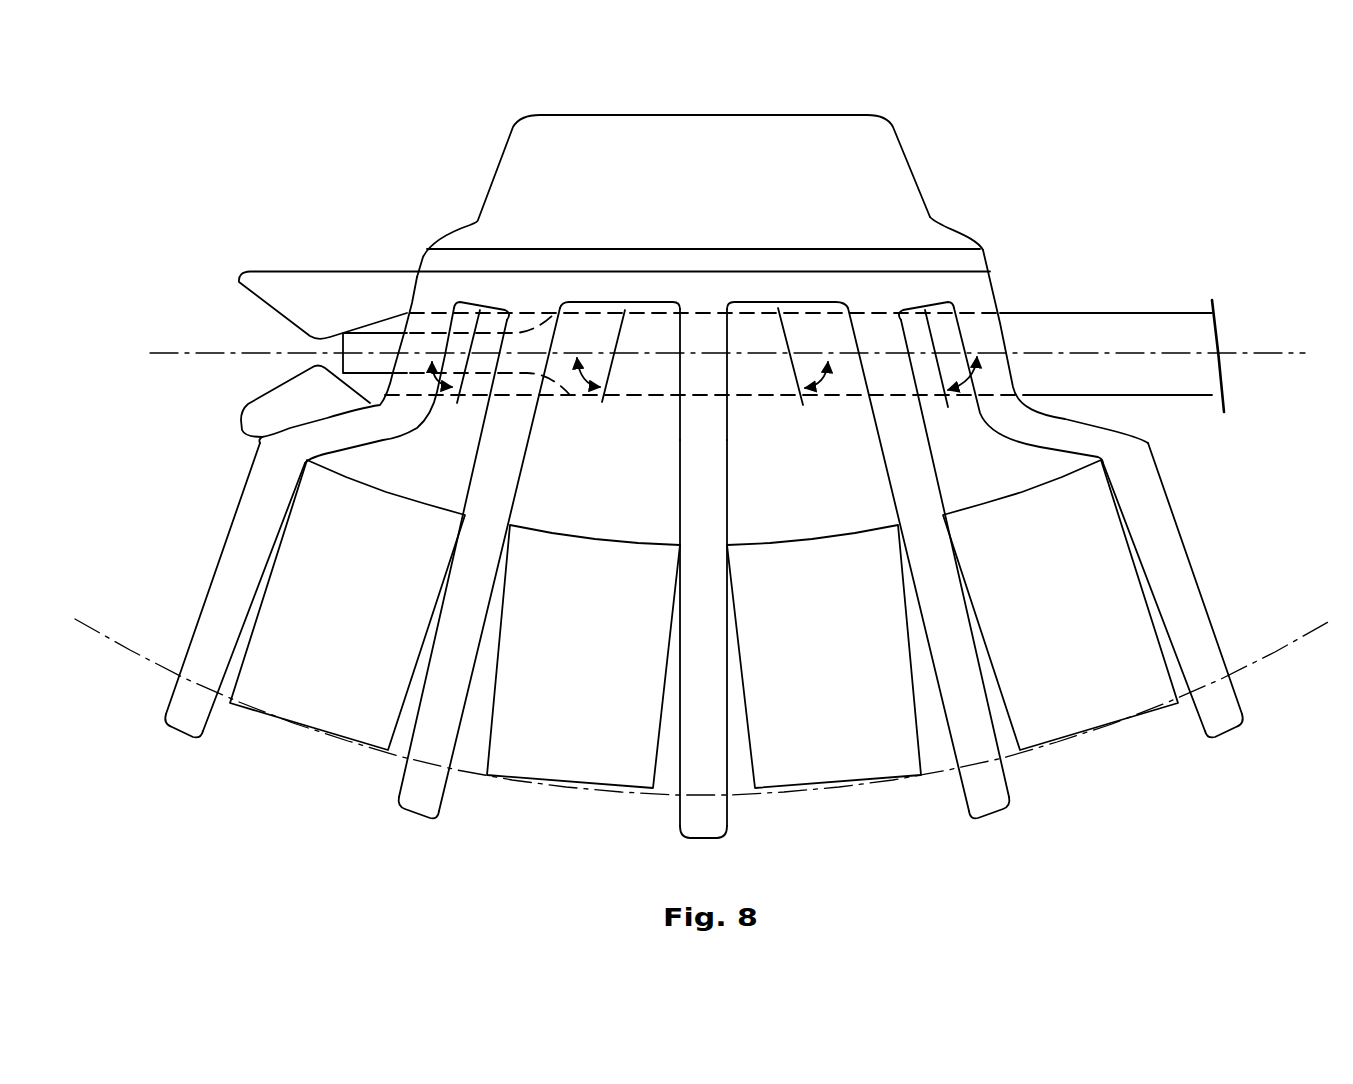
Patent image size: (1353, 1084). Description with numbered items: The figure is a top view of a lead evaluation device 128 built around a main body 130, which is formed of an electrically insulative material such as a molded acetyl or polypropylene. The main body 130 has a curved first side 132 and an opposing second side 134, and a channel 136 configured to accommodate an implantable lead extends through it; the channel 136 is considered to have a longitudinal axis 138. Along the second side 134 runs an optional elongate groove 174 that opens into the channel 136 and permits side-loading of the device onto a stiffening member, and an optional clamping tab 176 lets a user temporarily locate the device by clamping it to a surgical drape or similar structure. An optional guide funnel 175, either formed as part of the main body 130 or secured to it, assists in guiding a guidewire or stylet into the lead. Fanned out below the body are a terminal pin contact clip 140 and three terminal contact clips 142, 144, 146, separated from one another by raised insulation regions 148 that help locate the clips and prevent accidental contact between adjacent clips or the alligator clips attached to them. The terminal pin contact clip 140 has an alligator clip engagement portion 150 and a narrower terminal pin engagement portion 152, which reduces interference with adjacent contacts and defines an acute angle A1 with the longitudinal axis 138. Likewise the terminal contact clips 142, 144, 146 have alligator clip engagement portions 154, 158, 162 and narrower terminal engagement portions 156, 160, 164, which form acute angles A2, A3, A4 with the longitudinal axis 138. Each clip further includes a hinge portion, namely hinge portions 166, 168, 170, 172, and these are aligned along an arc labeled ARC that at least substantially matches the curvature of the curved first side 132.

The lead evaluation device 128 is at (702, 469).
The clamping tab 176 is at (772, 132).
The terminal engagement portion 164 is at (935, 235).
The second side 134 is at (987, 242).
The elongate groove 174 is at (538, 256).
The longitudinal axis 138 is at (200, 345).
The guide funnel 175 is at (255, 420).
The main body 130 is at (1003, 300).
The terminal pin engagement portion 152 is at (455, 300).
The terminal engagement portion 156 is at (668, 300).
The terminal engagement portion 160 is at (815, 300).
The channel 136 is at (705, 310).
The curved first side 132 is at (665, 785).
The hinge portion 166 is at (265, 712).
The hinge portion 168 is at (505, 778).
The hinge portion 170 is at (890, 780).
The hinge portion 172 is at (1127, 720).
The raised insulation regions 148 is at (170, 727).
The alligator clip engagement portion 150 is at (347, 634).
The terminal pin contact clip 140 is at (330, 715).
The alligator clip engagement portion 154 is at (583, 694).
The terminal contact clip 142 is at (582, 775).
The alligator clip engagement portion 158 is at (824, 694).
The terminal contact clip 144 is at (828, 778).
The alligator clip engagement portion 162 is at (1060, 634).
The terminal contact clip 146 is at (1075, 722).
The arc ARC is at (135, 640).
The acute angle A1 is at (452, 390).
The acute angle A2 is at (600, 390).
The acute angle A3 is at (805, 390).
The acute angle A4 is at (948, 392).